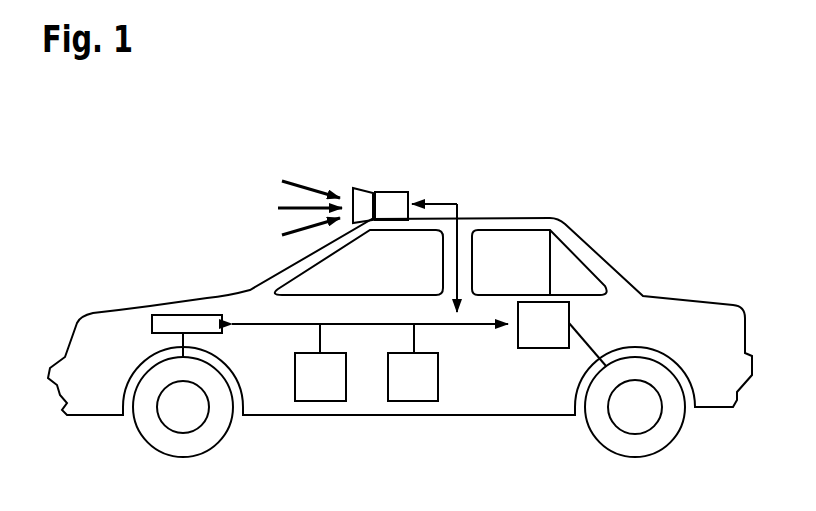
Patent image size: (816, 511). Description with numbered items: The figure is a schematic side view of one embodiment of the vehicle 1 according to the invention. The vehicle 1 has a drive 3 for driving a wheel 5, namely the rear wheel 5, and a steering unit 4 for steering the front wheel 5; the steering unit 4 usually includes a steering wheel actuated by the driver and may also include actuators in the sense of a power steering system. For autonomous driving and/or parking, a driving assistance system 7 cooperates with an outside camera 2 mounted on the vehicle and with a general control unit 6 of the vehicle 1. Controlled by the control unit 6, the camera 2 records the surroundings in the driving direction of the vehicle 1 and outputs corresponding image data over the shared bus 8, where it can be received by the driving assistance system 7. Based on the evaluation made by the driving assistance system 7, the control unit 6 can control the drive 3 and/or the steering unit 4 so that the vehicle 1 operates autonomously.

The vehicle 1 is at (141, 160).
The outside camera 2 is at (392, 191).
The drive 3 is at (543, 348).
The steering unit 4 is at (163, 314).
The wheel 5 is at (217, 428).
The control unit 6 is at (318, 401).
The driving assistance system 7 is at (412, 401).
The shared bus 8 is at (262, 323).